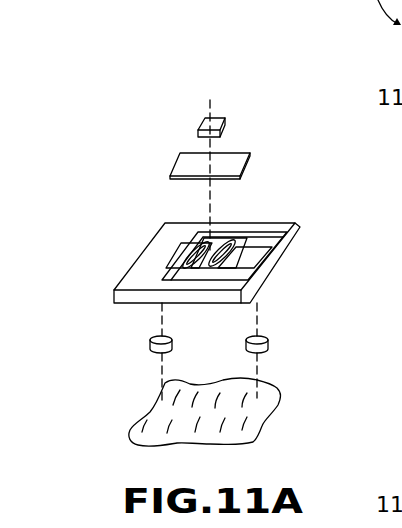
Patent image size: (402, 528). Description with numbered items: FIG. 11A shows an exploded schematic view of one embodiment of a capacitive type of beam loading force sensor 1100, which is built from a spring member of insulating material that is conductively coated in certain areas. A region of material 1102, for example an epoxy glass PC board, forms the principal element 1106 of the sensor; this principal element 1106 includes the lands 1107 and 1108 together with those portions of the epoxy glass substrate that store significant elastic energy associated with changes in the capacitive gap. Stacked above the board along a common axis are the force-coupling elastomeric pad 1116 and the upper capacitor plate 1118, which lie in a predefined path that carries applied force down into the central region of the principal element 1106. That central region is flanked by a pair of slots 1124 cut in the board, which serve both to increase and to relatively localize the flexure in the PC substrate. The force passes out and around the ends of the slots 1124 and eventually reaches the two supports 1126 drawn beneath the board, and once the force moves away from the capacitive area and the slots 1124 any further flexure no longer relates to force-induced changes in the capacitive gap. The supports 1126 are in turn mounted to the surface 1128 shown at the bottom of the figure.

The sensor 1100 is at (160, 106).
The principal element 1106 is at (150, 195).
The force-coupling elastomeric pad 1116 is at (218, 117).
The upper capacitor plate 1118 is at (240, 154).
The region of material 1102 is at (119, 286).
The land 1108 is at (182, 242).
The land 1107 is at (200, 268).
The slots 1124 is at (208, 242).
The supports 1126 is at (150, 338).
The surface 1128 is at (253, 432).